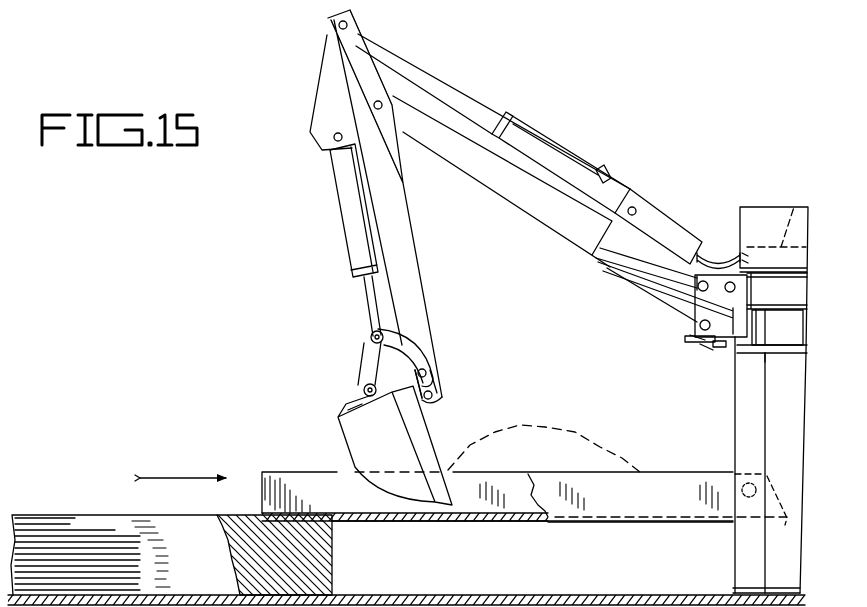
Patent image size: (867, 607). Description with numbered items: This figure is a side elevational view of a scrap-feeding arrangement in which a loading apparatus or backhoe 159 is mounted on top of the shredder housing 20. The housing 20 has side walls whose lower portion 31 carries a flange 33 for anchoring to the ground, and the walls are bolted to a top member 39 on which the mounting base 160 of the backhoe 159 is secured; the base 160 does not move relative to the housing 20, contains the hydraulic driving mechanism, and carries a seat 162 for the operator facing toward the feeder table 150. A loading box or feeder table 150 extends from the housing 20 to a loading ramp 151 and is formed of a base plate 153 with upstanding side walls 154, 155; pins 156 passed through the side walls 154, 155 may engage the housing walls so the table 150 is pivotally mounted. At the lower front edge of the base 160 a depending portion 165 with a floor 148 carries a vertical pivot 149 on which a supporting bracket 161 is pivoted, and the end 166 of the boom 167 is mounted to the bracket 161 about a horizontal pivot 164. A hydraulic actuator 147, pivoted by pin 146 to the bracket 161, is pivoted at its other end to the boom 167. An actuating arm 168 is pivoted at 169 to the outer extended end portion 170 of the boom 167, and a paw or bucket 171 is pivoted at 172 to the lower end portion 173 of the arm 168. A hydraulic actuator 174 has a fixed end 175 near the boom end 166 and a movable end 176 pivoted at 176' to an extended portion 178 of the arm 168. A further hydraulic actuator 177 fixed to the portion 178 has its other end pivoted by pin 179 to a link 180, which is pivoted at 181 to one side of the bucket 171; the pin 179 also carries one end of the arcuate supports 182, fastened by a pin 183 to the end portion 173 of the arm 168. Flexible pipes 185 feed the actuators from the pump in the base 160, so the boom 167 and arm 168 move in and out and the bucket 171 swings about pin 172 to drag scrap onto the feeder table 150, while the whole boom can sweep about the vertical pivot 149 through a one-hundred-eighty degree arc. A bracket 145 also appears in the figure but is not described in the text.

The housing 20 is at (733, 412).
The lower portion 31 is at (732, 566).
The flange 33 is at (735, 594).
The top member 39 is at (773, 354).
The bracket 145 is at (736, 287).
The pin 146 is at (696, 337).
The hydraulic actuator 147 is at (695, 324).
The floor 148 is at (698, 345).
The vertical pivot 149 is at (718, 350).
The feeder table 150 is at (570, 508).
The loading ramp 151 is at (240, 518).
The base plate 153 is at (498, 522).
The side wall 154 is at (636, 520).
The side wall 155 is at (294, 474).
The pin 156 is at (740, 470).
The backhoe 159 is at (678, 205).
The mounting base 160 is at (752, 210).
The supporting bracket 161 is at (745, 327).
The seat 162 is at (776, 218).
The horizontal pivot 164 is at (690, 290).
The depending portion 165 is at (705, 349).
The end of boom 166 is at (663, 273).
The boom 167 is at (560, 232).
The actuating arm 168 is at (412, 232).
The pivot 169 is at (383, 105).
The outer extended end portion 170 is at (457, 165).
The bucket 171 is at (355, 432).
The pivot 172 is at (436, 393).
The lower end portion 173 is at (425, 355).
The hydraulic actuator 174 is at (540, 140).
The fixed end 175 is at (610, 180).
The movable end 176 is at (493, 111).
The pivot 176' is at (377, 20).
The hydraulic actuator 177 is at (340, 224).
The extended portion 178 is at (368, 66).
The pin 179 is at (370, 336).
The link 180 is at (360, 360).
The pivot 181 is at (362, 391).
The arcuate supports 182 is at (410, 335).
The pin 183 is at (430, 370).
The flexible pipes 185 is at (712, 245).